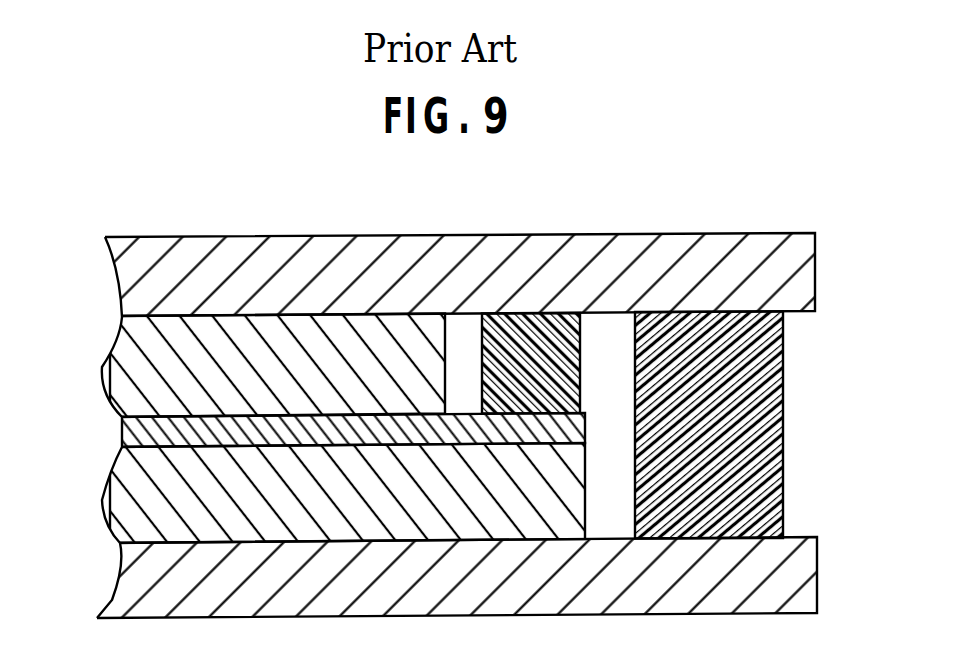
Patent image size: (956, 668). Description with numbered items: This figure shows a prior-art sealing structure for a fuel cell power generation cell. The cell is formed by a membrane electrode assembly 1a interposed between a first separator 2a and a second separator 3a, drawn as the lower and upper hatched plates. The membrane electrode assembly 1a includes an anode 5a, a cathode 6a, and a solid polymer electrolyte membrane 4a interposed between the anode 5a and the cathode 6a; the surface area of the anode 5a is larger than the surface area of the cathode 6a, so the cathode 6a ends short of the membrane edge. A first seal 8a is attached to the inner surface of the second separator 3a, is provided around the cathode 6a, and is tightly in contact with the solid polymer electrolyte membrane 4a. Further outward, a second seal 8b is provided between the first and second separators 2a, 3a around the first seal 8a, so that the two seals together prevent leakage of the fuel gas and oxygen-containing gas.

The membrane electrode assembly 1a is at (273, 388).
The first separator 2a is at (136, 578).
The second separator 3a is at (148, 288).
The solid polymer electrolyte membrane 4a is at (142, 438).
The anode 5a is at (132, 510).
The cathode 6a is at (136, 362).
The first seal 8a is at (514, 332).
The second seal 8b is at (716, 345).